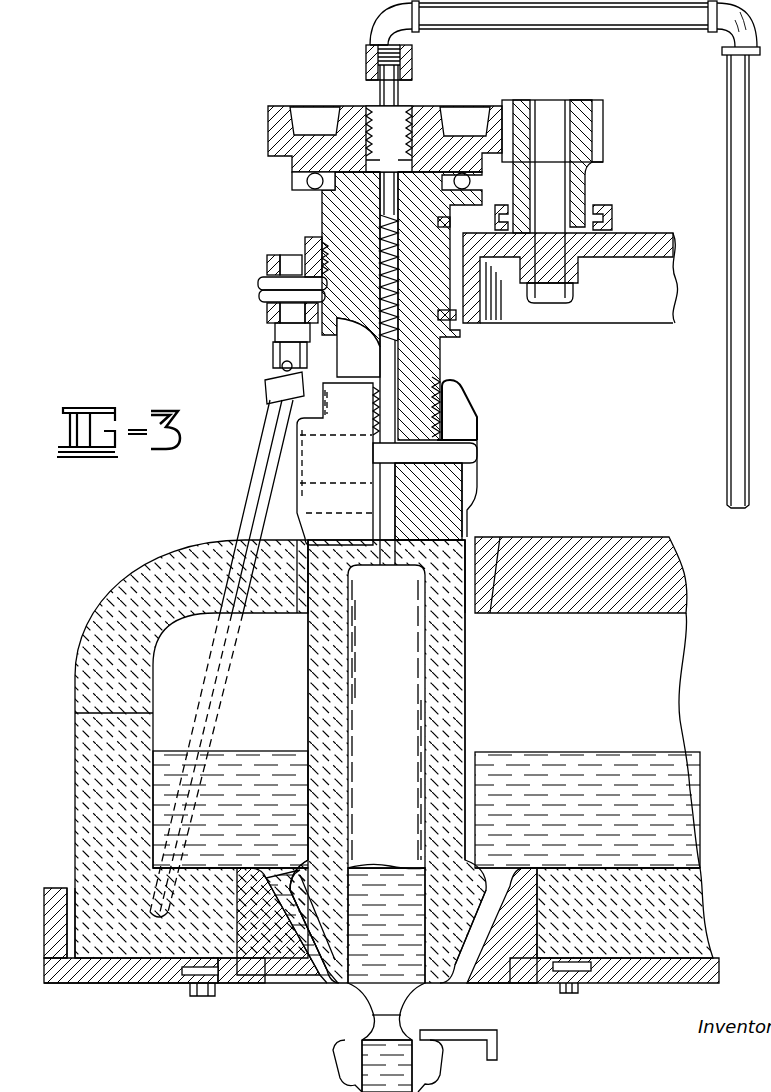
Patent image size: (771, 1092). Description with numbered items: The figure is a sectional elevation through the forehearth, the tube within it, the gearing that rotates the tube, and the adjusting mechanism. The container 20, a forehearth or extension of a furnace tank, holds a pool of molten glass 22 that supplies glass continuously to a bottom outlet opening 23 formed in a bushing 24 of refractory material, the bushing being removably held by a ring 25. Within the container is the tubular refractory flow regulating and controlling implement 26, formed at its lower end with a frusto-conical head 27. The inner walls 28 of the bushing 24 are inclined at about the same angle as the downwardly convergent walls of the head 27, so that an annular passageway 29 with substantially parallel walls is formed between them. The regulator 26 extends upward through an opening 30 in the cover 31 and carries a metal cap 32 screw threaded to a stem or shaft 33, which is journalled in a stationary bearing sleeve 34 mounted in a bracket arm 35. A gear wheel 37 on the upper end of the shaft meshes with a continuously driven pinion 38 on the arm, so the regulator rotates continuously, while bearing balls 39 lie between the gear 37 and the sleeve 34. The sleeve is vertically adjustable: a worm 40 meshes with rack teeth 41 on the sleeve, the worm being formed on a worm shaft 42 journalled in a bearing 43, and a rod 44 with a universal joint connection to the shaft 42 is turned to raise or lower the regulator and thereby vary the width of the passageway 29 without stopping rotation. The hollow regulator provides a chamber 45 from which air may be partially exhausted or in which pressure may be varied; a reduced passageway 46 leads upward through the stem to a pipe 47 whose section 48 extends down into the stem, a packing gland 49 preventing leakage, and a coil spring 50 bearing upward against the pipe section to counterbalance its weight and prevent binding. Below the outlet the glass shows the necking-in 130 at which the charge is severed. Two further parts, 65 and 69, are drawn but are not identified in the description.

The container 20 is at (82, 738).
The pool of molten glass 22 is at (232, 752).
The bottom outlet opening 23 is at (333, 985).
The bushing 24 is at (282, 985).
The ring 25 is at (235, 985).
The flow regulating and controlling implement 26 is at (467, 708).
The frusto-conical head 27 is at (480, 915).
The inner walls 28 is at (462, 968).
The annular passageway 29 is at (300, 985).
The opening 30 is at (478, 538).
The cover 31 is at (568, 540).
The metal cap 32 is at (480, 460).
The stem or shaft 33 is at (442, 400).
The bearing sleeve 34 is at (322, 215).
The bracket arm 35 is at (640, 318).
The gear wheel 37 is at (270, 138).
The pinion 38 is at (596, 146).
The bearing balls 39 is at (307, 183).
The worm 40 is at (258, 284).
The rack teeth 41 is at (305, 252).
The worm shaft 42 is at (275, 333).
The bearing 43 is at (267, 314).
The rod 44 is at (262, 468).
The chamber 45 is at (420, 700).
The passageway 46 is at (392, 380).
The pipe 47 is at (633, 30).
The pipe section 48 is at (400, 92).
The packing gland 49 is at (362, 116).
The coil spring 50 is at (400, 320).
The cup 65 is at (340, 1054).
The packing ring 69 is at (594, 212).
The neck-in portion 130 is at (400, 1012).